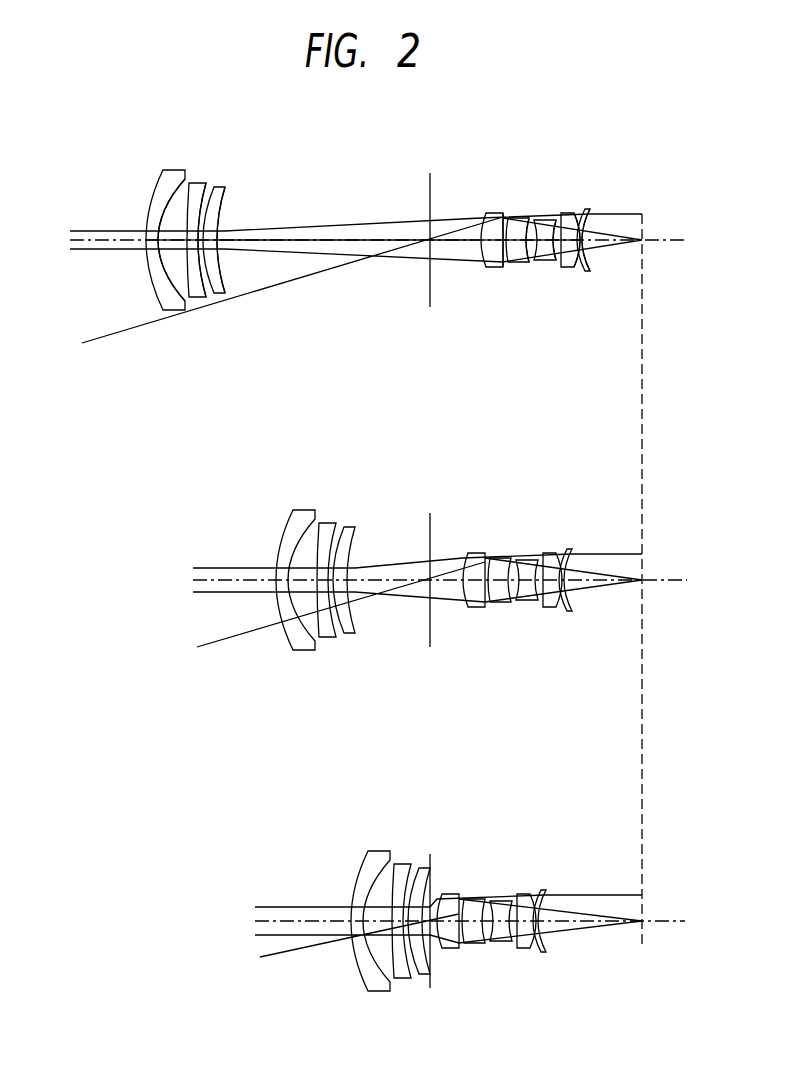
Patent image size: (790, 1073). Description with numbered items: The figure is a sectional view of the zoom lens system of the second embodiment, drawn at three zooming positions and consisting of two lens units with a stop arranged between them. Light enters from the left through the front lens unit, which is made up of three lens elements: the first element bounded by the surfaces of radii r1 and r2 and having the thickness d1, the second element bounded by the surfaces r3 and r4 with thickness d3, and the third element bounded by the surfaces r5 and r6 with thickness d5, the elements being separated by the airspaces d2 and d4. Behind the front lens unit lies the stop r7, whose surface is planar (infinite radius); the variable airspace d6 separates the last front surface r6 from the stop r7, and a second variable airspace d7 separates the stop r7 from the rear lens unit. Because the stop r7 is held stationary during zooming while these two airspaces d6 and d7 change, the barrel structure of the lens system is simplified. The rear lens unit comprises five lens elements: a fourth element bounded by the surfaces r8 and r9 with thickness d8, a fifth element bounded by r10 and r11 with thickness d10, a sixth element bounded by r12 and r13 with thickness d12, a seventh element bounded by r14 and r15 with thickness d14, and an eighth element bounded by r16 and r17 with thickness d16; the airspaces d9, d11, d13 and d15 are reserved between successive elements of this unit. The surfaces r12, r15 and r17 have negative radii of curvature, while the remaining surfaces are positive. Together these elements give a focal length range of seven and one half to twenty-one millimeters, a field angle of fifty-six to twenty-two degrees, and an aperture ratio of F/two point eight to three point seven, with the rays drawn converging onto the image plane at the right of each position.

The radius of curvature of first lens surface r1 is at (158, 176).
The radius of curvature of second lens surface r2 is at (175, 180).
The radius of curvature of third lens surface r3 is at (189, 182).
The radius of curvature of fourth lens surface r4 is at (206, 185).
The radius of curvature of fifth lens surface r5 is at (214, 188).
The radius of curvature of sixth lens surface r6 is at (228, 196).
The stop r7 is at (428, 190).
The radius of curvature of eighth lens surface r8 is at (485, 213).
The radius of curvature of ninth lens surface r9 is at (503, 215).
The radius of curvature of tenth lens surface r10 is at (508, 218).
The radius of curvature of eleventh lens surface r11 is at (528, 218).
The radius of curvature of twelfth lens surface r12 is at (535, 220).
The radius of curvature of thirteenth lens surface r13 is at (555, 220).
The radius of curvature of fourteenth lens surface r14 is at (562, 213).
The radius of curvature of fifteenth lens surface r15 is at (576, 213).
The radius of curvature of sixteenth lens surface r16 is at (586, 210).
The radius of curvature of seventeenth lens surface r17 is at (591, 210).
The thickness of first lens element d1 is at (153, 246).
The airspace between first and second lens elements d2 is at (170, 252).
The thickness of second lens element d3 is at (192, 287).
The airspace between second and third lens elements d4 is at (210, 293).
The thickness of third lens element d5 is at (230, 285).
The variable airspace between front lens unit and stop d6 is at (312, 257).
The variable airspace between stop and rear lens unit d7 is at (460, 243).
The thickness of fourth lens element d8 is at (490, 243).
The airspace between fourth and fifth lens elements d9 is at (505, 257).
The thickness of fifth lens element d10 is at (523, 240).
The airspace between fifth and sixth lens elements d11 is at (530, 253).
The thickness of sixth lens element d12 is at (543, 243).
The airspace between sixth and seventh lens elements d13 is at (562, 253).
The thickness of seventh lens element d14 is at (572, 240).
The airspace between seventh and eighth lens elements d15 is at (580, 253).
The thickness of eighth lens element d16 is at (587, 243).